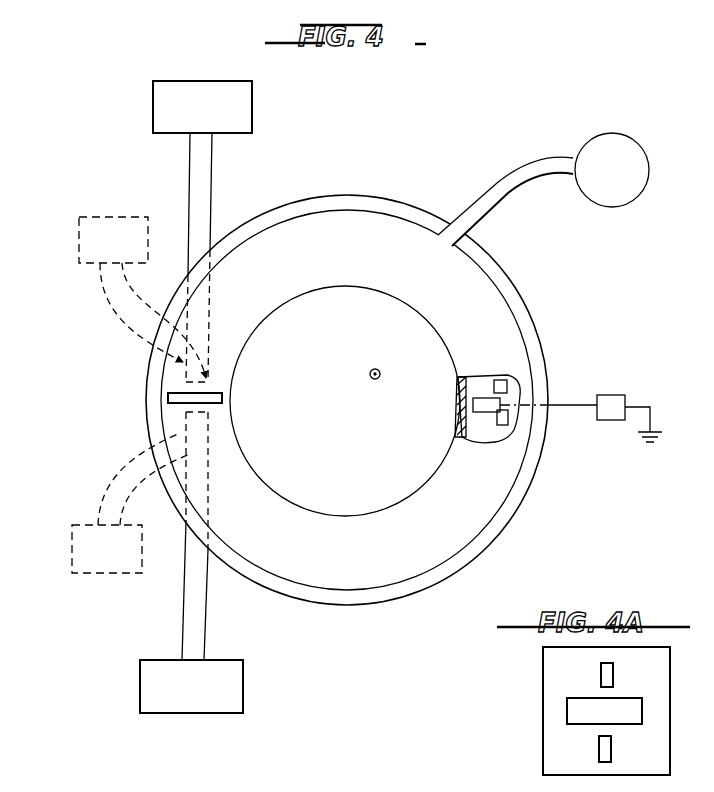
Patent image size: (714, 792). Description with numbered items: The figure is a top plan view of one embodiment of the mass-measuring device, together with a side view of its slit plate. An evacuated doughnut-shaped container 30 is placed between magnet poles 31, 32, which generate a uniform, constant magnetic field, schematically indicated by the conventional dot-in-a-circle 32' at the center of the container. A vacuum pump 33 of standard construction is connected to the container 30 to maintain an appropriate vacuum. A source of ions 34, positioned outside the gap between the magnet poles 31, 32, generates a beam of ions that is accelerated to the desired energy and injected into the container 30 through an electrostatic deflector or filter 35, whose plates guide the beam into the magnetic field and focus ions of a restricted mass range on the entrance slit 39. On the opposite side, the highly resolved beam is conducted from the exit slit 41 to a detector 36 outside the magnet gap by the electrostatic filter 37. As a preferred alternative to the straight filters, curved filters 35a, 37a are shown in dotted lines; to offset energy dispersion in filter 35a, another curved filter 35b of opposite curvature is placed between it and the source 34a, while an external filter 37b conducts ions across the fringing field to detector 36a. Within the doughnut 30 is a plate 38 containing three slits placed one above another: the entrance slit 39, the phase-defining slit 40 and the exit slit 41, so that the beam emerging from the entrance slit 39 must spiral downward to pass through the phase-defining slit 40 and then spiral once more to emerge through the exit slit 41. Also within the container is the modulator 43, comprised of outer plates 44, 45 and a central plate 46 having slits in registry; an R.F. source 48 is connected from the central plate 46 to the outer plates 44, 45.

In FIG. 4, the evacuated doughnut-shaped container 30 is at (373, 212).
In FIG. 4, the magnet pole 31 is at (544, 346).
In FIG. 4, the magnet pole 32 is at (376, 400).
In FIG. 4, the dot-in-a-circle 32' is at (363, 391).
In FIG. 4, the vacuum pump 33 is at (649, 180).
In FIG. 4, the source of ions 34 is at (140, 683).
In FIG. 4, the source 34a is at (80, 568).
In FIG. 4, the electrostatic deflector or filter 35 is at (180, 612).
In FIG. 4, the curved filter 35a is at (178, 434).
In FIG. 4, the curved filter 35b is at (112, 466).
In FIG. 4, the detector 36 is at (153, 120).
In FIG. 4, the detector 36a is at (79, 232).
In FIG. 4, the electrostatic filter 37 is at (190, 178).
In FIG. 4, the curved filter 37a is at (178, 364).
In FIG. 4, the external filter 37b is at (118, 313).
In FIG. 4, the plate 38 is at (168, 398).
In FIG. 4A, the plate 38 is at (543, 668).
In FIG. 4A, the entrance slit 39 is at (601, 677).
In FIG. 4A, the phase-defining slit 40 is at (579, 716).
In FIG. 4A, the exit slit 41 is at (612, 750).
In FIG. 4, the modulator 43 is at (472, 405).
In FIG. 4, the plate 44 is at (499, 384).
In FIG. 4, the plate 45 is at (500, 425).
In FIG. 4, the central plate 46 is at (488, 425).
In FIG. 4, the R.F. source 48 is at (609, 423).